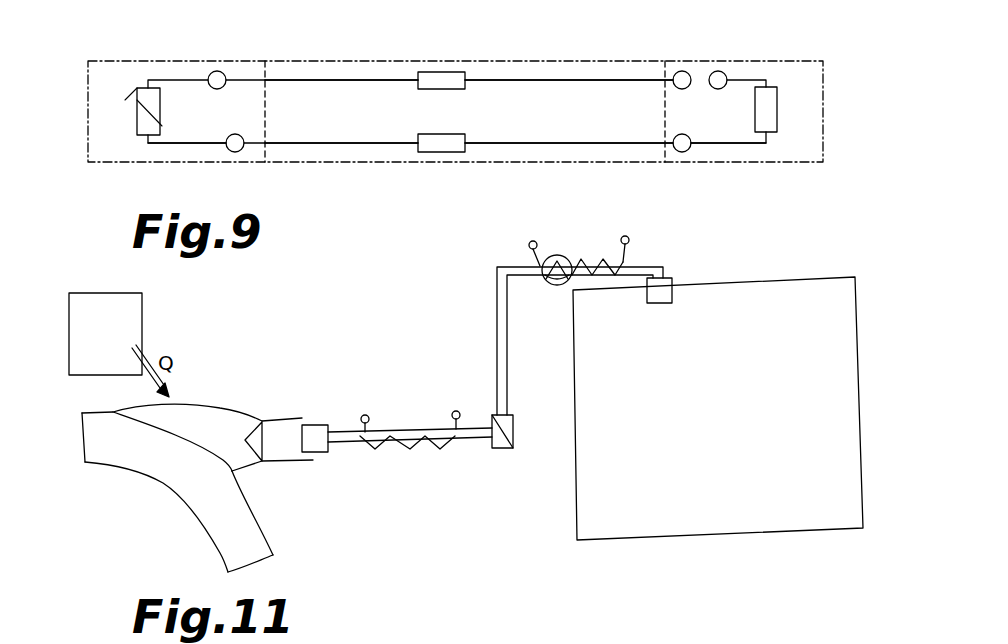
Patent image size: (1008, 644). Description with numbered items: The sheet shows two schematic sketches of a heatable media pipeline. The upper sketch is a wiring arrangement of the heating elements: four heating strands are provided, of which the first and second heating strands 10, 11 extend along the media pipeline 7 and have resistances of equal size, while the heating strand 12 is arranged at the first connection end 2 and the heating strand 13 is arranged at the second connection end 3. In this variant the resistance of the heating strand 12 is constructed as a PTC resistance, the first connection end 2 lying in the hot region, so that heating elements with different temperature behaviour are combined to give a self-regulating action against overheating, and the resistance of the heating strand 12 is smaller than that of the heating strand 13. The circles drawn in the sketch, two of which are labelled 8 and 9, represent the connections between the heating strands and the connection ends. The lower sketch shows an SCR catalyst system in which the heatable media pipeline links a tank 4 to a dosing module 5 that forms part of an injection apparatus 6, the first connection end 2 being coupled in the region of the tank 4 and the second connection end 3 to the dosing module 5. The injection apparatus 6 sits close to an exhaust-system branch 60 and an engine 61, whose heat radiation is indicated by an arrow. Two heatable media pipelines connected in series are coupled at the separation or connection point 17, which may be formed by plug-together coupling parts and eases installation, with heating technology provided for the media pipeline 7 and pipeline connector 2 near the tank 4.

In FIG. 9, the first connection end 2 is at (112, 62).
In FIG. 11, the first connection end 2 is at (672, 287).
In FIG. 9, the second connection end 3 is at (776, 61).
In FIG. 11, the second connection end 3 is at (321, 425).
In FIG. 11, the tank 4 is at (768, 294).
In FIG. 11, the dosing module 5 is at (310, 455).
In FIG. 11, the injection apparatus 6 is at (255, 421).
In FIG. 9, the media pipeline 7 is at (318, 61).
In FIG. 11, the media pipeline 7 is at (397, 428).
In FIG. 9, the plug connector 8 is at (682, 71).
In FIG. 9, the plug connector 9 is at (718, 71).
In FIG. 9, the first heating strand 10 is at (373, 146).
In FIG. 11, the first heating strand 10 is at (395, 452).
In FIG. 9, the second heating strand 11 is at (373, 80).
In FIG. 11, the second heating strand 11 is at (583, 250).
In FIG. 9, the heating strand 12 is at (177, 146).
In FIG. 9, the heating strand 13 is at (718, 146).
In FIG. 11, the separation or connection point 17 is at (484, 405).
In FIG. 11, the exhaust-system branch 60 is at (255, 543).
In FIG. 11, the engine 61 is at (100, 310).